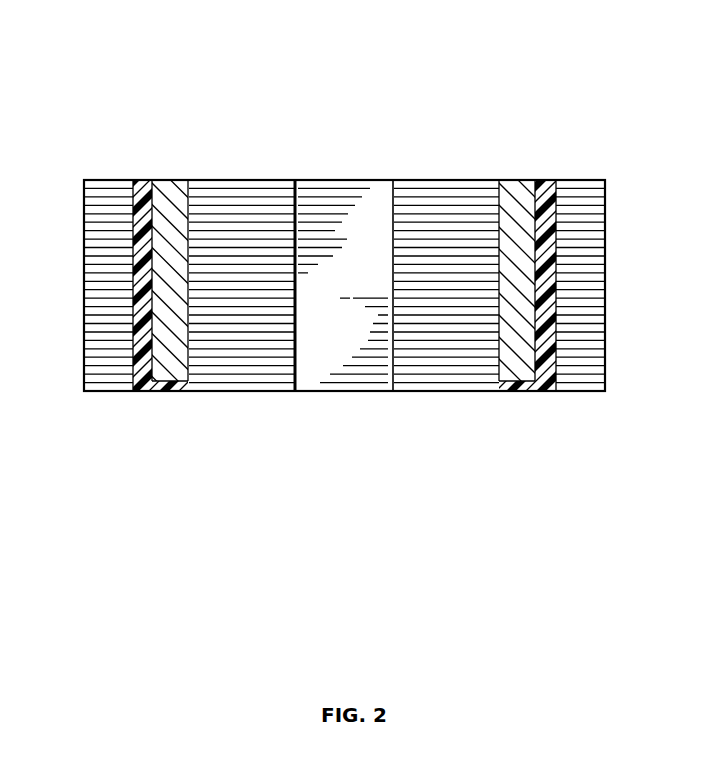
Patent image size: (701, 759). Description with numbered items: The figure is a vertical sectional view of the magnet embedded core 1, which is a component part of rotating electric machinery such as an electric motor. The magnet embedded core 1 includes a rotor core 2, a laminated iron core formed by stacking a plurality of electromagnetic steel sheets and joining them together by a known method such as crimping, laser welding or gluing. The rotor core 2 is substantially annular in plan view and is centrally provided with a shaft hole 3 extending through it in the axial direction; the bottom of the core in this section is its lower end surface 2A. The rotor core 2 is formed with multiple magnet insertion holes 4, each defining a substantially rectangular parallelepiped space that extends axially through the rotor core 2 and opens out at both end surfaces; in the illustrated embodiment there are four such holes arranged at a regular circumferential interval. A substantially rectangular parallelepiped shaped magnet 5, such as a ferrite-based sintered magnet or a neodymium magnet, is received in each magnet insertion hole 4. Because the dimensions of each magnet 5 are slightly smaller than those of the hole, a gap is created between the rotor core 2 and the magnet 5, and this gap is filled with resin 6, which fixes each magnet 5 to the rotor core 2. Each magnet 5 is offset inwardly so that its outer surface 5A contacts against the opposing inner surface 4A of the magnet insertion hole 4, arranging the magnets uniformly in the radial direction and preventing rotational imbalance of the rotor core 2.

The magnet embedded core 1 is at (392, 106).
The rotor core 2 is at (590, 212).
The lower end surface 2A is at (272, 392).
The shaft hole 3 is at (297, 218).
The magnet insertion hole 4 is at (142, 183).
The inner surface 4A is at (188, 345).
The magnet 5 is at (165, 183).
The outer surface 5A is at (190, 225).
The resin 6 is at (137, 268).